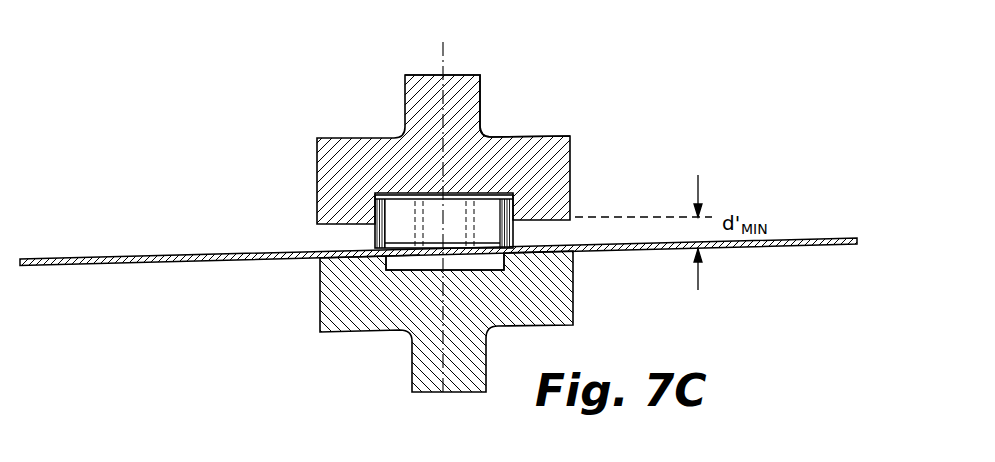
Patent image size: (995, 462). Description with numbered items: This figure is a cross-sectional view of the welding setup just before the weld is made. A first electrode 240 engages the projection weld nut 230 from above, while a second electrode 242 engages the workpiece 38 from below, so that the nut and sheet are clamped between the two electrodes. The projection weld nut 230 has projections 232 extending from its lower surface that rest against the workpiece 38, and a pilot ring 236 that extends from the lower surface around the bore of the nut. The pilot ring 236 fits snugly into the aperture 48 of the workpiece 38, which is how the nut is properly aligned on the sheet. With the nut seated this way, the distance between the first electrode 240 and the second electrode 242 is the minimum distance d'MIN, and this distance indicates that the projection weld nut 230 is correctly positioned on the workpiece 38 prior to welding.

The workpiece 38 is at (786, 238).
The aperture 48 is at (418, 257).
The projection weld nut 230 is at (571, 185).
The projections 232 is at (386, 247).
The pilot ring 236 is at (405, 268).
The first electrode 240 is at (571, 137).
The second electrode 242 is at (572, 303).